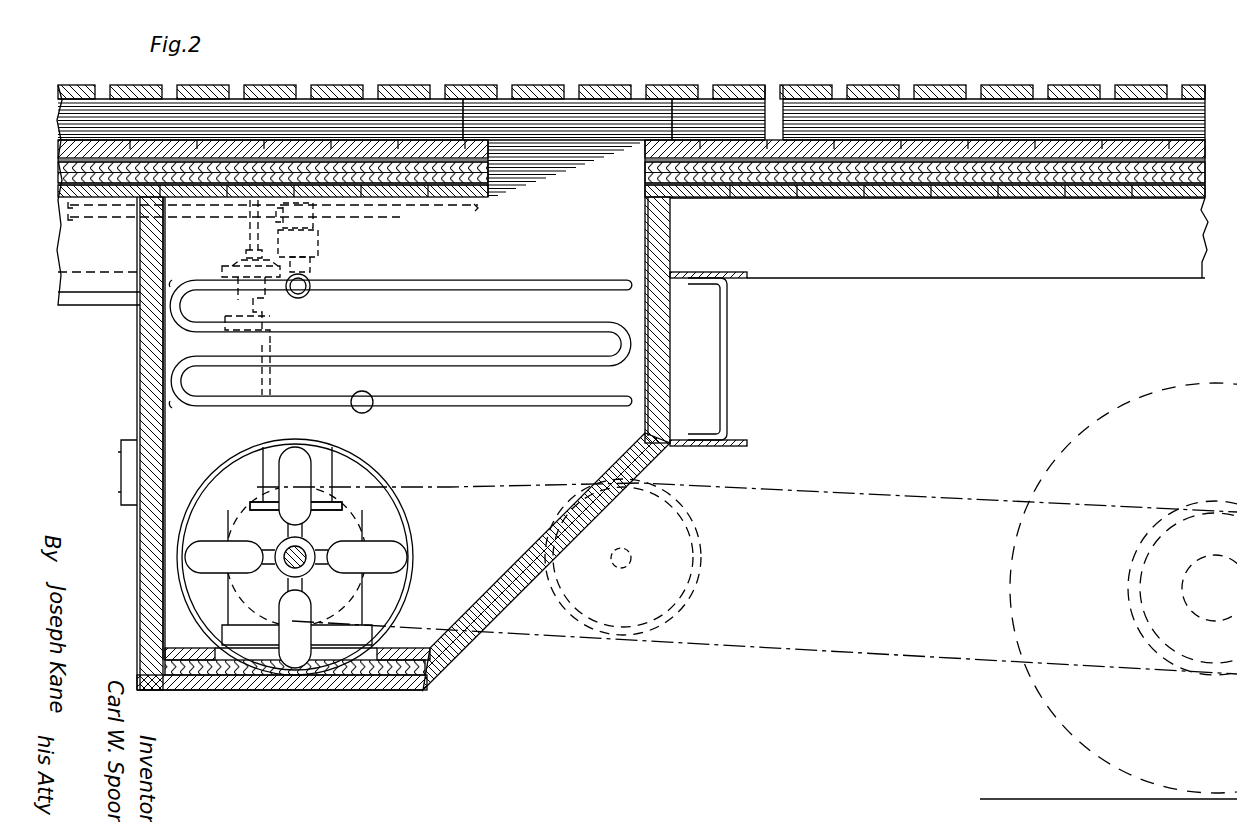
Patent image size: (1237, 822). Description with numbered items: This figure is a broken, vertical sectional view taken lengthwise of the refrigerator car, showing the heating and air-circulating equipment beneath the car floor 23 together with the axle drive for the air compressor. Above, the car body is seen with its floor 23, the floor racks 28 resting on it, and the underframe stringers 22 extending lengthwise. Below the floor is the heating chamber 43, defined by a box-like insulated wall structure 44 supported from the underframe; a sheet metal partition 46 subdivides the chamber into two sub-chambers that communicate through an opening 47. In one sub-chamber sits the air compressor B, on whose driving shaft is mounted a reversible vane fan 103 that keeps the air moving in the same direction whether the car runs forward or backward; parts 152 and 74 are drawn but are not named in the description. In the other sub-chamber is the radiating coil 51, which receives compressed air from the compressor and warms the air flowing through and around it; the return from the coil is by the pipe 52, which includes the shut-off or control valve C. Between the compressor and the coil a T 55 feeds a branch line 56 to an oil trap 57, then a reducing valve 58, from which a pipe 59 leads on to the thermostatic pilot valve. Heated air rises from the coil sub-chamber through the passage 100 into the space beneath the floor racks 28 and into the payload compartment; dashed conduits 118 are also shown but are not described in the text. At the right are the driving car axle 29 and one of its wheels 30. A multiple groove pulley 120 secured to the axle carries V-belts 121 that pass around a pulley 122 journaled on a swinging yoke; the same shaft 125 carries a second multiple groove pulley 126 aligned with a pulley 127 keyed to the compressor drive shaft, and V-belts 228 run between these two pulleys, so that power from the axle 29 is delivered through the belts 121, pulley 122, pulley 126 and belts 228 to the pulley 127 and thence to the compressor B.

The passage 100 is at (553, 158).
The floor racks 28 is at (774, 95).
The floor 23 is at (60, 150).
The stringers 22 is at (1168, 270).
The pipe 59 is at (114, 218).
The conduits 118 is at (70, 206).
The box-like insulated wall structure 44 is at (140, 258).
The sheet metal partition 46 is at (242, 688).
The heating chamber 43 is at (398, 335).
The radiating coil 51 is at (510, 322).
The pipe 52 is at (270, 380).
The valve stem 74 is at (250, 236).
The shut-off or control valve C is at (226, 268).
The reducing valve 58 is at (314, 218).
The oil trap 57 is at (318, 252).
The branch line 56 is at (312, 268).
The T 55 is at (312, 280).
The communicating opening 47 is at (362, 468).
The air compressor B is at (360, 603).
The pulley 127 is at (344, 506).
The reversible vane fan 103 is at (312, 516).
The fan hub 152 is at (303, 565).
The V-belts 228 is at (478, 487).
The V-belts 121 is at (908, 658).
The second multiple groove pulley 126 is at (700, 582).
The pulley 122 is at (643, 640).
The shaft 125 is at (620, 568).
The wheels 30 is at (1064, 740).
The multiple groove pulley 120 is at (1203, 686).
The driving car axle 29 is at (1181, 621).